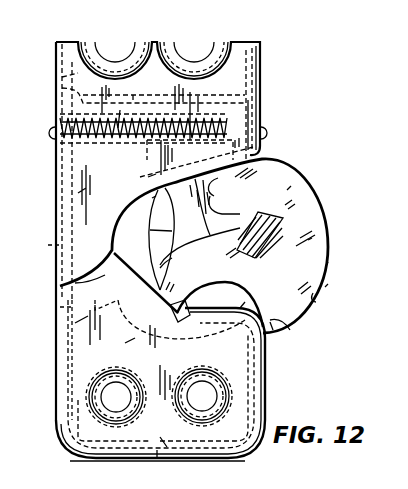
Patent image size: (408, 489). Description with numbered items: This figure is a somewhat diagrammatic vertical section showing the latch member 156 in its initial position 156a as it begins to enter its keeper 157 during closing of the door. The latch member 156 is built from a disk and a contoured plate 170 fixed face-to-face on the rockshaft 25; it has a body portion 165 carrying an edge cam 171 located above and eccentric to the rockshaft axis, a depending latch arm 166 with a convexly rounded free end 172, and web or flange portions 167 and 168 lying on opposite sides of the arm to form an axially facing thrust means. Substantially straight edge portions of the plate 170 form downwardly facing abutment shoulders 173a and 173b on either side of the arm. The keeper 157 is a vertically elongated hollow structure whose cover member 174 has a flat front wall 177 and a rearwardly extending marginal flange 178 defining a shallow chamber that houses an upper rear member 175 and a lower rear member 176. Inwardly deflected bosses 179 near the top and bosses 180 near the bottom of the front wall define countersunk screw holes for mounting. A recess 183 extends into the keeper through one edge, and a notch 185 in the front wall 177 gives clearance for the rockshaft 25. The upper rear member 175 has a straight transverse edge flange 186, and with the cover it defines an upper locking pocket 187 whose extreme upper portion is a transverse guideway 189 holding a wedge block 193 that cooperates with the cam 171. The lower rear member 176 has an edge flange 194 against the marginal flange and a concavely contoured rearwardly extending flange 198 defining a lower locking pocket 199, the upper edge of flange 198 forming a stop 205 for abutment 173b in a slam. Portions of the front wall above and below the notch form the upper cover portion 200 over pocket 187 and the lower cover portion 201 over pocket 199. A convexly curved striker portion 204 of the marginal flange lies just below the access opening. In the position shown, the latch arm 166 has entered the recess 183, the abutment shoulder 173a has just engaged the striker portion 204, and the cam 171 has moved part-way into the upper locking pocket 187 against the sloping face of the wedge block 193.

The keeper 157 is at (262, 70).
The inwardly deflected bosses 179 is at (103, 62).
The upper rear member 175 is at (62, 77).
The transverse guideway 189 is at (125, 110).
The straight transverse edge flange 186 is at (200, 96).
The wedge block 193 is at (148, 153).
The locking pocket 187 is at (173, 153).
The upper cover portion 200 is at (148, 177).
The cover member 174 is at (56, 169).
The front wall 177 is at (78, 193).
The marginal flange 178 is at (48, 245).
The recess 183 is at (116, 246).
The notch 185 is at (75, 283).
The stop 205 is at (60, 307).
The lower rear member 176 is at (75, 323).
The edge flange 194 is at (63, 380).
The inwardly deflected bosses 180 is at (116, 405).
The lower locking pocket 199 is at (142, 365).
The rearwardly extending edge flange 198 is at (125, 343).
The convexly rounded free end 172 is at (175, 313).
The web or flange portion 167 is at (138, 209).
The latch arm 166 is at (174, 231).
The lower cover portion 201 is at (179, 262).
The abutment shoulder 173b is at (220, 191).
The contoured plate 170 is at (288, 190).
The rockshaft 25 is at (280, 220).
The body portion 165 is at (308, 240).
The edge cam 171 is at (326, 266).
The latch member 156 is at (323, 287).
The initial position of latch member 156a is at (312, 300).
The web or flange portion 168 is at (240, 308).
The abutment shoulder 173a is at (290, 330).
The striker portion 204 is at (273, 330).